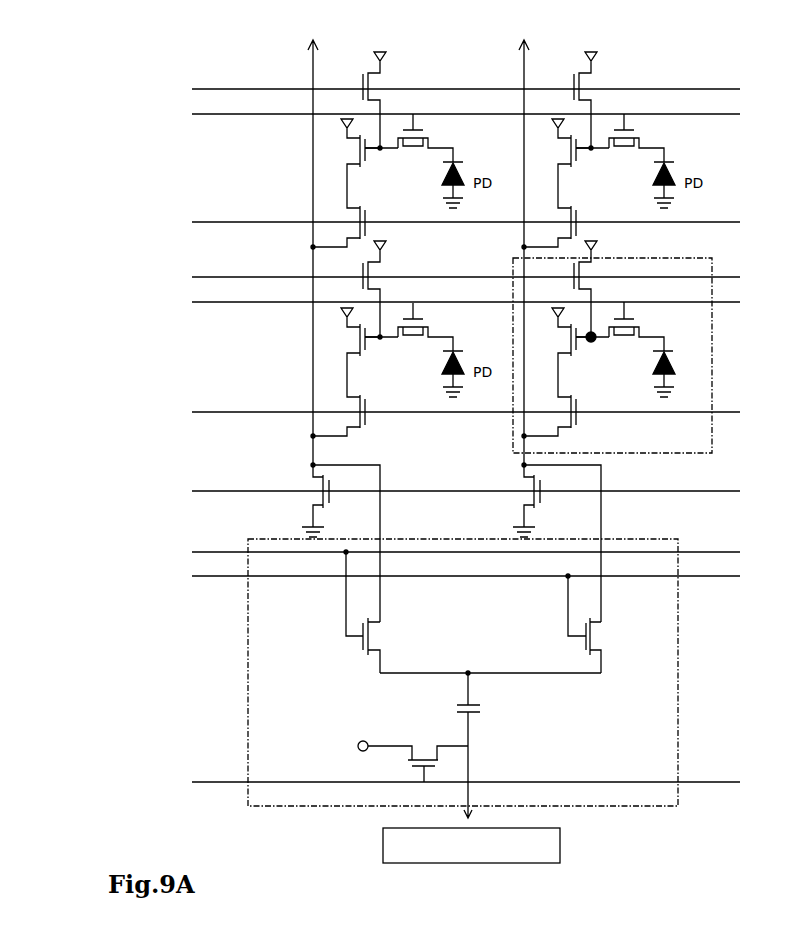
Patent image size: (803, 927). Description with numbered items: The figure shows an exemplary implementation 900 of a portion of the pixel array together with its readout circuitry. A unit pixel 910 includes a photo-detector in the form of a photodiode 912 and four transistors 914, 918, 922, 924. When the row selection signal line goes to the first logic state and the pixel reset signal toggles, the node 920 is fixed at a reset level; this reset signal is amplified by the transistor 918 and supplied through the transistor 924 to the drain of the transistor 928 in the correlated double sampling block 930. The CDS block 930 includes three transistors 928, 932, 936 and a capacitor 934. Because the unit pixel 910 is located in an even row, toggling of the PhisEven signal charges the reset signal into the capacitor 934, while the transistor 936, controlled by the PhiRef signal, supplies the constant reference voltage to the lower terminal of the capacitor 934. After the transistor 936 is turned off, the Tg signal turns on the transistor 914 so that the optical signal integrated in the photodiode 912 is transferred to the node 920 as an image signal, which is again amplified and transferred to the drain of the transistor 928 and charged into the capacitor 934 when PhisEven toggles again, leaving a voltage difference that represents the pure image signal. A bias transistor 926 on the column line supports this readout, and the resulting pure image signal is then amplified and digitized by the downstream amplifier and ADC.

The image sensor circuit 900 is at (178, 139).
The unit pixel 910 is at (612, 347).
The photodiode 912 is at (681, 377).
The transistor 914 is at (640, 326).
The transistor 918 is at (573, 352).
The node 920 is at (595, 343).
The transistor 922 is at (598, 289).
The transistor 924 is at (565, 419).
The bias transistor 926 is at (552, 501).
The transistor 928 is at (599, 623).
The correlated double sampling block 930 is at (463, 678).
The transistor 932 is at (378, 611).
The capacitor 934 is at (485, 744).
The transistor 936 is at (413, 752).